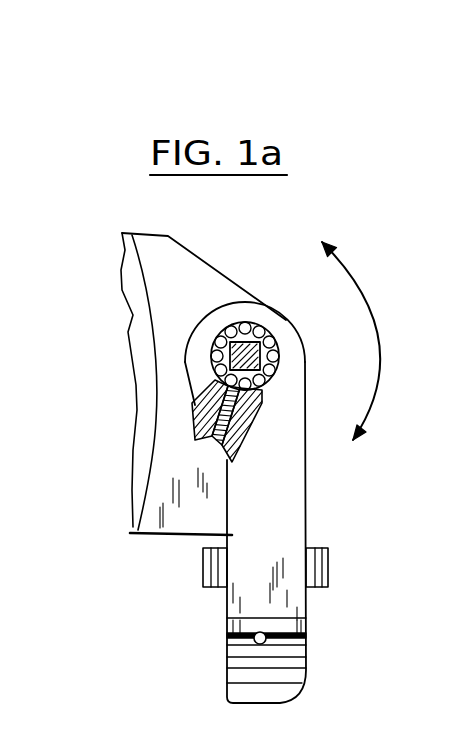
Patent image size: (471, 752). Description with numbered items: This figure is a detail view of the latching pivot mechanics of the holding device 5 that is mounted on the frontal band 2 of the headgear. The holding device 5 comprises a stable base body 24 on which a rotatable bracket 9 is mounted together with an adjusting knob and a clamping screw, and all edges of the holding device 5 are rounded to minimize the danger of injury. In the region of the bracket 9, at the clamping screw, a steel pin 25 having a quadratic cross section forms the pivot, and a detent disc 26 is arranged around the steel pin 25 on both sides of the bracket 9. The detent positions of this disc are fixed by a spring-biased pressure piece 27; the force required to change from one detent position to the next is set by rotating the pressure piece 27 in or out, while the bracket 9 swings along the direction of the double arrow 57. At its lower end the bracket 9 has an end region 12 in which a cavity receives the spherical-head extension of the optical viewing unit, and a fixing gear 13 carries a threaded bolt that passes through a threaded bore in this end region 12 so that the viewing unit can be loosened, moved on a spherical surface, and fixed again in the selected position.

The frontal band 2 is at (140, 373).
The stable base body 24 is at (190, 273).
The holding device 5 is at (271, 294).
The rotatable bracket 9 is at (287, 493).
The steel pin 25 is at (260, 352).
The detent disc 26 is at (278, 371).
The spring-biased pressure piece 27 is at (192, 408).
The fixing gear 13 is at (328, 570).
The end region of the bracket 12 is at (300, 600).
The double arrow 57 is at (378, 391).